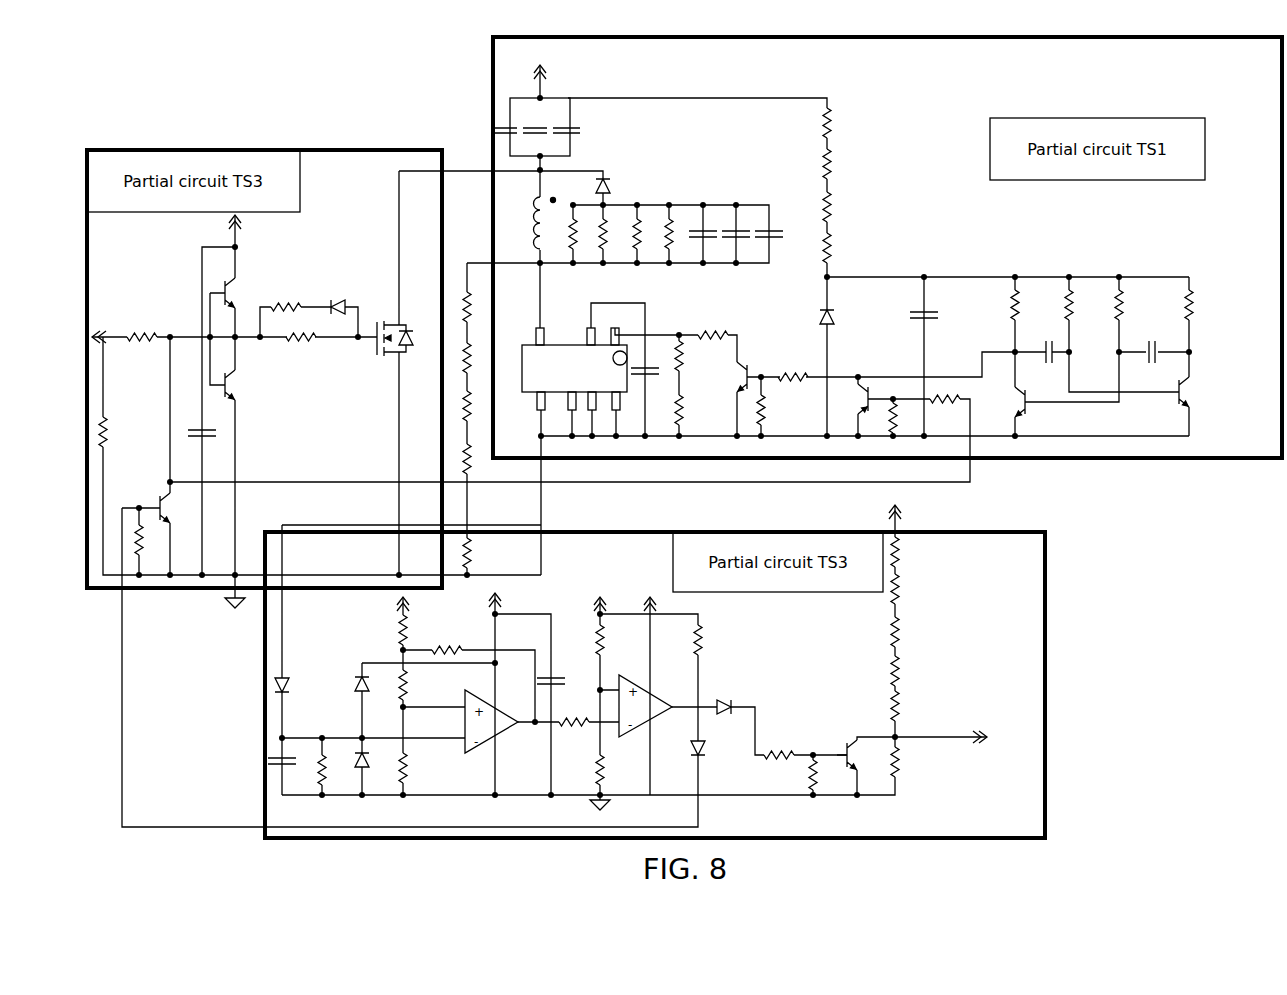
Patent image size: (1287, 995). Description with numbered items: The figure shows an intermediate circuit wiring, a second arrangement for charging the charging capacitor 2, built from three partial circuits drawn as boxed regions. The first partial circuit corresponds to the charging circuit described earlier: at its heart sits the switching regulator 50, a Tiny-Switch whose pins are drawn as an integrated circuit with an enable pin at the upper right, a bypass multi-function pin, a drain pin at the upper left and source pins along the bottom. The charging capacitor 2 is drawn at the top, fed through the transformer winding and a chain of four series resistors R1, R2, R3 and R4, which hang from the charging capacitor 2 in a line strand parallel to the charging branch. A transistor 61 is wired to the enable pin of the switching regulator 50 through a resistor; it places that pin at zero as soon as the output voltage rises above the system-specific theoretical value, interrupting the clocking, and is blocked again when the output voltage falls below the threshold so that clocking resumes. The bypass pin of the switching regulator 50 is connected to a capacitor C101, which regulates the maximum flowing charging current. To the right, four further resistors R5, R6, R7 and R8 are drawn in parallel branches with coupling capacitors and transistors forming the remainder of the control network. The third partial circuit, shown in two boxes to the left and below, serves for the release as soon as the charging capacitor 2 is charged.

The charging capacitor 2 is at (548, 113).
The switching regulator 50 is at (605, 350).
The transistor 61 is at (748, 364).
The capacitor C101 is at (661, 378).
The resistor R1 is at (842, 123).
The resistor R2 is at (842, 164).
The resistor R3 is at (842, 207).
The resistor R4 is at (842, 248).
The resistor R5 is at (1030, 305).
The resistor R6 is at (1083, 305).
The resistor R7 is at (1133, 305).
The resistor R8 is at (1204, 305).